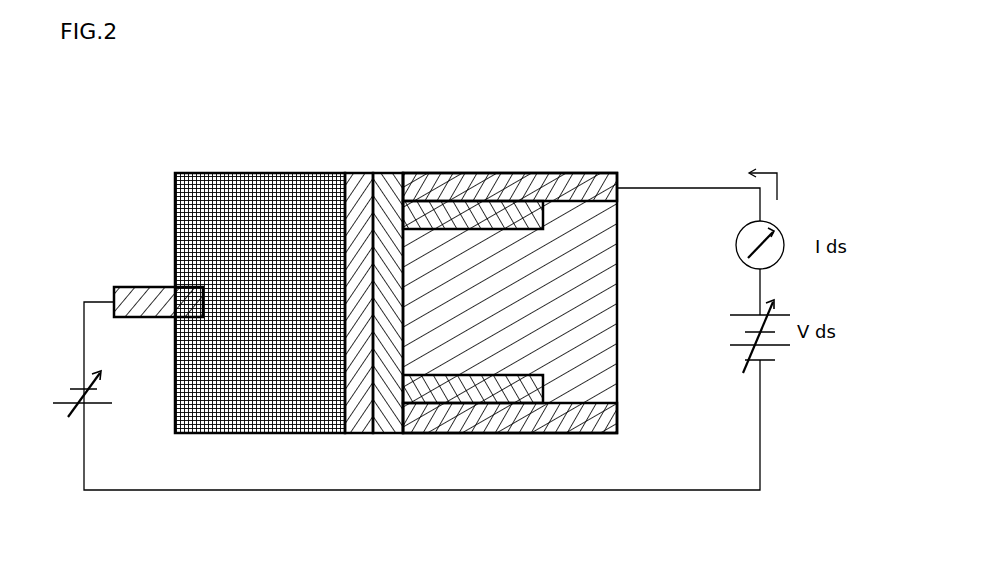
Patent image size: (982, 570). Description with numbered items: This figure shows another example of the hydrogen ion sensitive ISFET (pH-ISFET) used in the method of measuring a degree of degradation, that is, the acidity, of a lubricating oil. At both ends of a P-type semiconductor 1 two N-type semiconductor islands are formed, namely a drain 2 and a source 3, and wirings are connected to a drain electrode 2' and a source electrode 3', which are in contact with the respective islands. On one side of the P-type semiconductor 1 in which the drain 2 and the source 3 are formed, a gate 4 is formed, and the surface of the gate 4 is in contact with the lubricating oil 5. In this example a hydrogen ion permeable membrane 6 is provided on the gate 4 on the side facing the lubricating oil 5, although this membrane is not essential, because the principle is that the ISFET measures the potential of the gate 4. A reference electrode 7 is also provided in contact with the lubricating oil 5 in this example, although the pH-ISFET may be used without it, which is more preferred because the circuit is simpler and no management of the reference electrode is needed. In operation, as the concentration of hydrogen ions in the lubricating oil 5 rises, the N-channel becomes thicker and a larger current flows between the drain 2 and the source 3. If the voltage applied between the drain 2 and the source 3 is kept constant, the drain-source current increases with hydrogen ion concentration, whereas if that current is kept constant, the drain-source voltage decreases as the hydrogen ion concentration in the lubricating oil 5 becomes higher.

The P-type semiconductor 1 is at (588, 302).
The drain 2 is at (473, 183).
The drain electrode 2' is at (510, 169).
The source 3 is at (473, 424).
The source electrode 3' is at (510, 438).
The gate 4 is at (388, 184).
The lubricating oil 5 is at (262, 186).
The hydrogen ion permeable membrane 6 is at (360, 184).
The reference electrode 7 is at (145, 294).